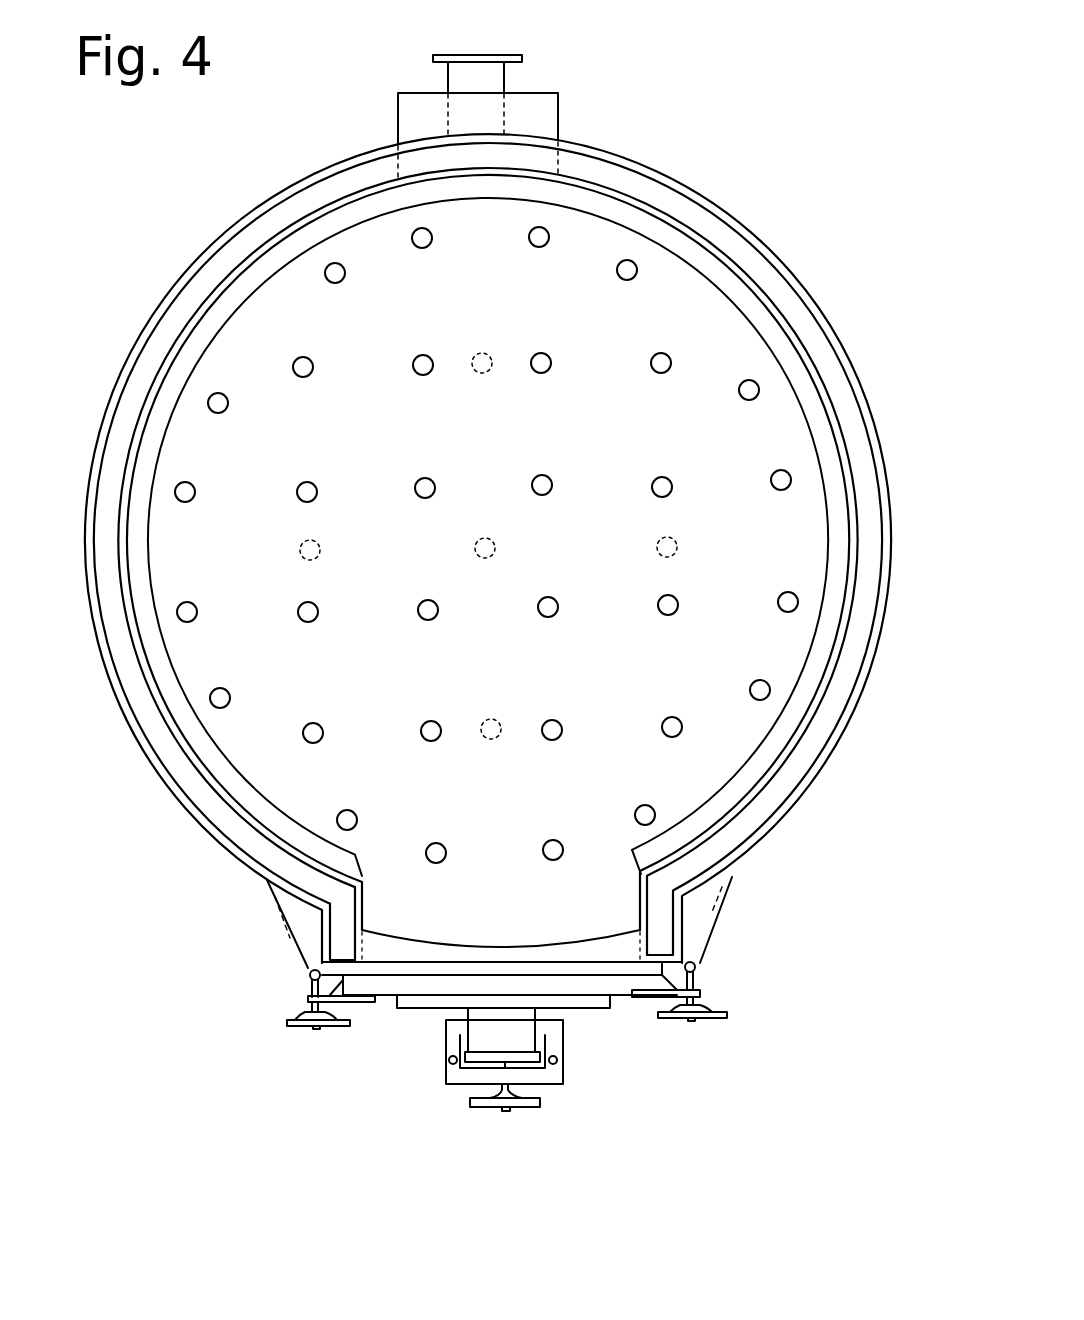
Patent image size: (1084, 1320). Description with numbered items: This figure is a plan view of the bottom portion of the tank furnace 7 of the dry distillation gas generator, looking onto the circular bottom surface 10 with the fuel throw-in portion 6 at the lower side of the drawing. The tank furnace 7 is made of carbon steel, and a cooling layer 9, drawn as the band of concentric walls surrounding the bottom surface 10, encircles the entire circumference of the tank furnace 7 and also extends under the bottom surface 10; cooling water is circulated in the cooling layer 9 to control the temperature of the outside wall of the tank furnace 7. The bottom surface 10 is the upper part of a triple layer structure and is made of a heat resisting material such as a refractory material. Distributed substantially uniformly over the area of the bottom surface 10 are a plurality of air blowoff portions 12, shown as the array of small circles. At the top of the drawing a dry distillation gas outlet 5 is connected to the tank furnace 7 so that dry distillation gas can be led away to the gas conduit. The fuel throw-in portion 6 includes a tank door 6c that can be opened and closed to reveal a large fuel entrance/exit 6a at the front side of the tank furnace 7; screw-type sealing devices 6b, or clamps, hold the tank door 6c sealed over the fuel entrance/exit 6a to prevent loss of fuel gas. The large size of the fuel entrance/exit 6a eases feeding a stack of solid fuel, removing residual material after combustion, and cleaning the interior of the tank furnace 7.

The dry distillation gas outlet 5 is at (480, 80).
The tank furnace 7 is at (684, 233).
The cooling layer 9 is at (858, 614).
The bottom surface 10 is at (755, 431).
The air blowoff portions 12 is at (551, 486).
The fuel throw-in portion 6 is at (640, 1025).
The fuel entrance/exit 6a is at (403, 935).
The screw-type sealing devices 6b is at (290, 1030).
The tank door 6c is at (575, 992).